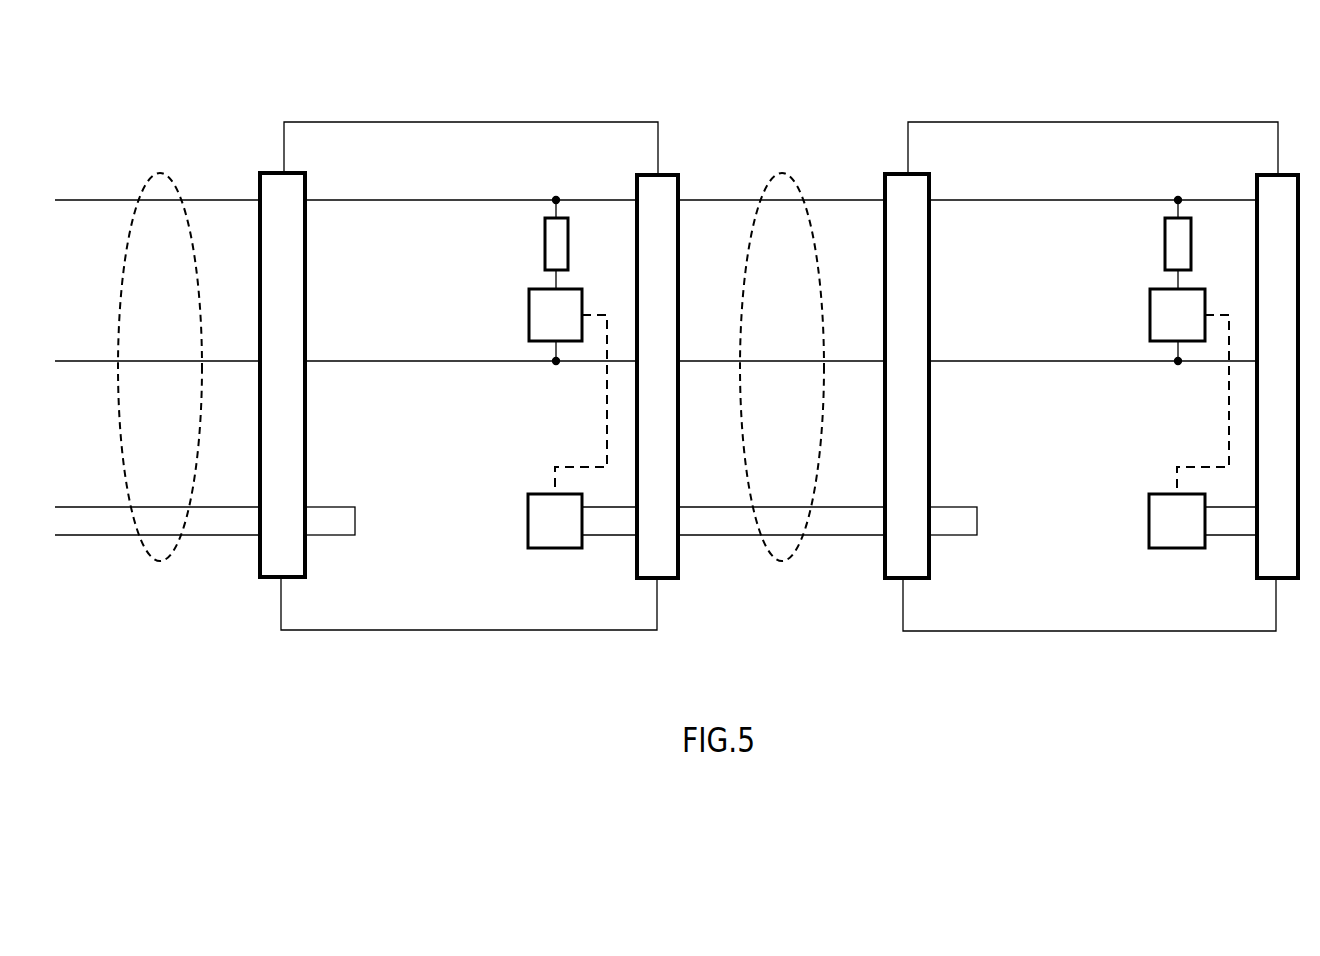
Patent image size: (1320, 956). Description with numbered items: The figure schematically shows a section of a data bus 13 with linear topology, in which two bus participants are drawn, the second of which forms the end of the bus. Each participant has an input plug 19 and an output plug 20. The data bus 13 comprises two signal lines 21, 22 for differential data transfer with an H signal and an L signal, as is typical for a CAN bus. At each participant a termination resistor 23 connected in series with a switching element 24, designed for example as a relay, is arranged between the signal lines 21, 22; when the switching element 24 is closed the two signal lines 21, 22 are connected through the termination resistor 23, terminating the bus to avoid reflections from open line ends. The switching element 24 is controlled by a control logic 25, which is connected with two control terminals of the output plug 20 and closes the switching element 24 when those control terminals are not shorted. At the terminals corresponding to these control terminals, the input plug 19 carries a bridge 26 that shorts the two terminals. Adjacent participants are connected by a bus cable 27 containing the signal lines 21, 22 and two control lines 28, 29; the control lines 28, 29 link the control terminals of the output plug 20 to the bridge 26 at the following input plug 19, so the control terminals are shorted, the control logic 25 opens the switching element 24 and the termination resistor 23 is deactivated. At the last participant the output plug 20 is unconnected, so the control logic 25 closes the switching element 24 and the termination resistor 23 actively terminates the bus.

The data bus 13 is at (758, 91).
The input plug 19 is at (294, 387).
The output plug 20 is at (669, 384).
The signal line 21 is at (345, 200).
The signal line 22 is at (345, 361).
The termination resistor 23 is at (569, 248).
The switching element 24 is at (568, 326).
The control logic 25 is at (567, 532).
The bridge 26 is at (356, 521).
The bus cable 27 is at (161, 173).
The control line 28 is at (97, 507).
The control line 29 is at (97, 535).